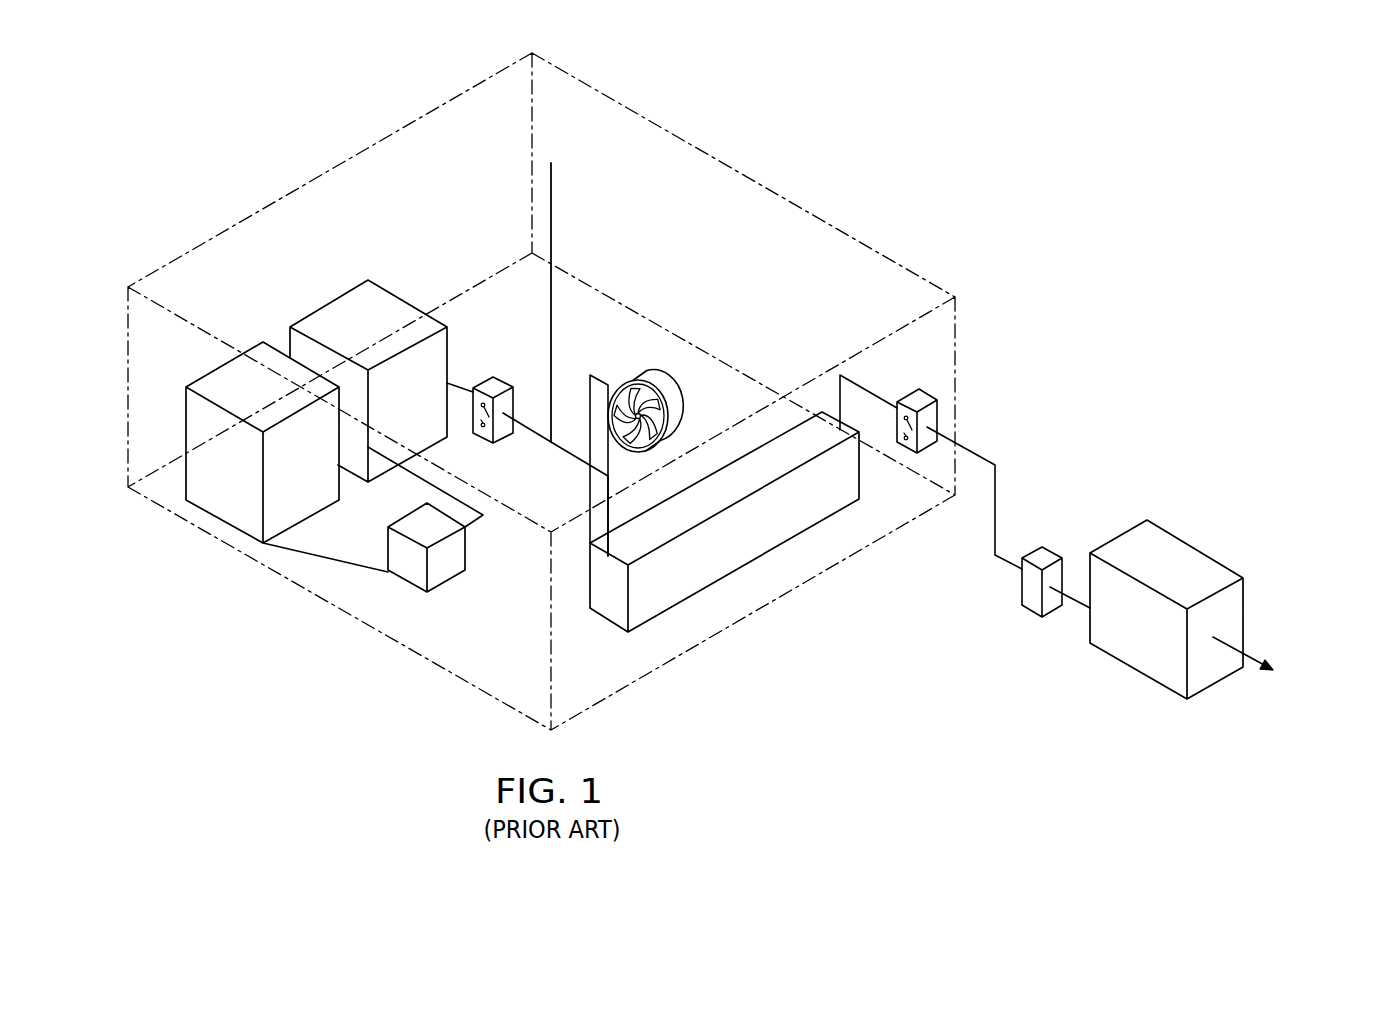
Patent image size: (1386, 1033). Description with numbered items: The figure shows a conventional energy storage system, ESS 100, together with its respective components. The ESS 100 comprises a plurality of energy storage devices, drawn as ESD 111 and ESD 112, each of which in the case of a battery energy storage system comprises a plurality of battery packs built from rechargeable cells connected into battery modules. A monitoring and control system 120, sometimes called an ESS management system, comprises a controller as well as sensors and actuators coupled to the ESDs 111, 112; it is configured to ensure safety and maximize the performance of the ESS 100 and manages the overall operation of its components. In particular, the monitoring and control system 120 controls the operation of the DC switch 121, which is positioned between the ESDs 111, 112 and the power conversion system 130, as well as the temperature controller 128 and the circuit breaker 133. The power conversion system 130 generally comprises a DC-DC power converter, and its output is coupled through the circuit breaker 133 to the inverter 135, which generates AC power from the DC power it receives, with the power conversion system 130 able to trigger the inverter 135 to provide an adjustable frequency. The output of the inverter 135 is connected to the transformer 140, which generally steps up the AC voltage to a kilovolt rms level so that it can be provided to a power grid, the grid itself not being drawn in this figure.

The ESS 100 is at (1090, 215).
The ESD 111 is at (220, 503).
The ESD 112 is at (338, 312).
The monitoring and control system 120 is at (408, 585).
The DC switch 121 is at (493, 377).
The temperature controller 128 is at (650, 377).
The power conversion system 130 is at (745, 563).
The circuit breaker 133 is at (918, 392).
The inverter 135 is at (1042, 610).
The transformer 140 is at (1140, 673).